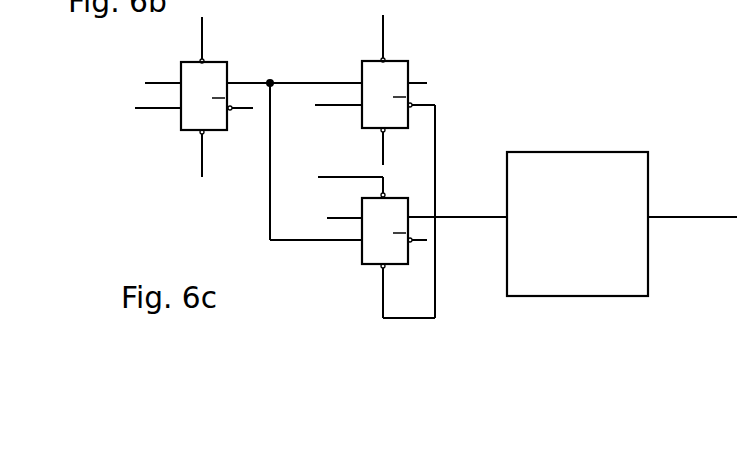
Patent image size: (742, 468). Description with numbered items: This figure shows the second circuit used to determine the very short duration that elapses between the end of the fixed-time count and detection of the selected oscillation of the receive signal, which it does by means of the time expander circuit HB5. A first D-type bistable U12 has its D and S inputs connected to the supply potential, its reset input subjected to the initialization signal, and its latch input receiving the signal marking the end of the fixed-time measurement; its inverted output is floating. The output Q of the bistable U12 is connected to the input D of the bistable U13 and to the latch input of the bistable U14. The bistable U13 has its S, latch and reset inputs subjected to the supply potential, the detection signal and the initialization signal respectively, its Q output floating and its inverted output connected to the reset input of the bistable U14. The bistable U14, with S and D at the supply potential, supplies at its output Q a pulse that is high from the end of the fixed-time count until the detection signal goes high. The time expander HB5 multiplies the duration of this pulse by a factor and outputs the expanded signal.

The first D-type bistable U12 is at (172, 125).
The bistable U13 is at (422, 62).
The bistable U14 is at (421, 193).
The time expander circuit HB5 is at (596, 227).